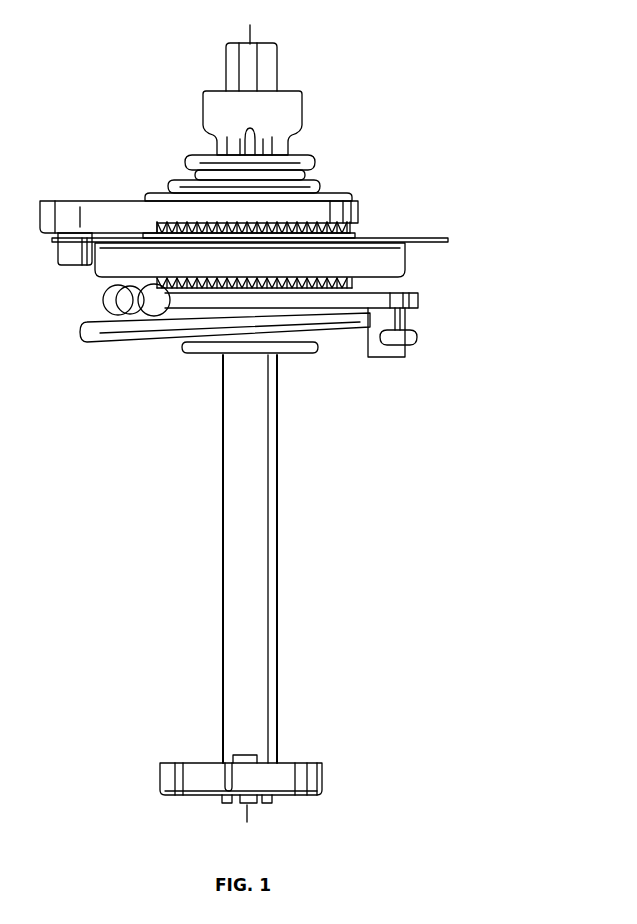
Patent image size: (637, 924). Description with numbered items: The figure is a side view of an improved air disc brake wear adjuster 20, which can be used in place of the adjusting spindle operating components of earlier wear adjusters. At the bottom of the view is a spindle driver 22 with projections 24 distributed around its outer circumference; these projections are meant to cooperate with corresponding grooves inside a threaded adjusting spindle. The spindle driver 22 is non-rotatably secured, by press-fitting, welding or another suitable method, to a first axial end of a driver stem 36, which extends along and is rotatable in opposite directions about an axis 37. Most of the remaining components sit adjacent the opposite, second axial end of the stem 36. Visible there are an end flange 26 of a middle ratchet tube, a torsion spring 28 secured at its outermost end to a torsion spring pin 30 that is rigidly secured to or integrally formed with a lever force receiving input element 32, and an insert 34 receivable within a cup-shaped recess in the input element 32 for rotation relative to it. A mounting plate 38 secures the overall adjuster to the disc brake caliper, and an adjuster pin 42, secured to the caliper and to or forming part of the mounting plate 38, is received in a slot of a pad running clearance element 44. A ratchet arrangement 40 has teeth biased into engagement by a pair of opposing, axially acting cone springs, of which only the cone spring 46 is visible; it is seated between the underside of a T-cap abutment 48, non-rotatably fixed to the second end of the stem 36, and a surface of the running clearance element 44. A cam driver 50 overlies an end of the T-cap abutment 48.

The air disc brake wear adjuster 20 is at (388, 201).
The spindle driver 22 is at (325, 778).
The projections 24 is at (225, 777).
The end flange 26 is at (182, 352).
The torsion spring 28 is at (86, 330).
The torsion spring pin 30 is at (408, 320).
The lever force receiving input element 32 is at (420, 299).
The insert 34 is at (355, 288).
The driver stem 36 is at (280, 503).
The axis 37 is at (252, 33).
The mounting plate 38 is at (450, 240).
The ratchet arrangement 40 is at (360, 228).
The adjuster pin 42 is at (58, 258).
The pad running clearance element 44 is at (102, 200).
The cone spring 46 is at (342, 185).
The T-cap abutment 48 is at (307, 157).
The cam driver 50 is at (278, 64).